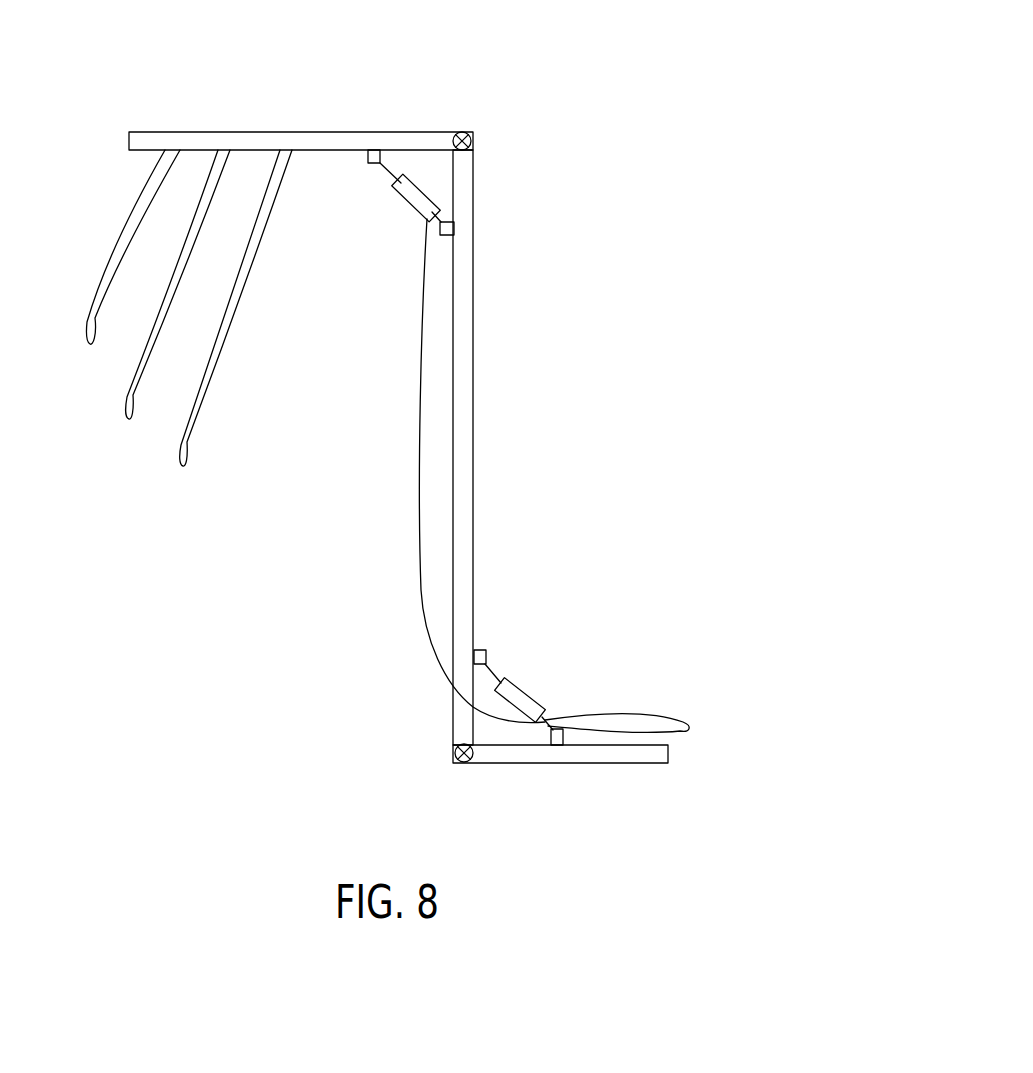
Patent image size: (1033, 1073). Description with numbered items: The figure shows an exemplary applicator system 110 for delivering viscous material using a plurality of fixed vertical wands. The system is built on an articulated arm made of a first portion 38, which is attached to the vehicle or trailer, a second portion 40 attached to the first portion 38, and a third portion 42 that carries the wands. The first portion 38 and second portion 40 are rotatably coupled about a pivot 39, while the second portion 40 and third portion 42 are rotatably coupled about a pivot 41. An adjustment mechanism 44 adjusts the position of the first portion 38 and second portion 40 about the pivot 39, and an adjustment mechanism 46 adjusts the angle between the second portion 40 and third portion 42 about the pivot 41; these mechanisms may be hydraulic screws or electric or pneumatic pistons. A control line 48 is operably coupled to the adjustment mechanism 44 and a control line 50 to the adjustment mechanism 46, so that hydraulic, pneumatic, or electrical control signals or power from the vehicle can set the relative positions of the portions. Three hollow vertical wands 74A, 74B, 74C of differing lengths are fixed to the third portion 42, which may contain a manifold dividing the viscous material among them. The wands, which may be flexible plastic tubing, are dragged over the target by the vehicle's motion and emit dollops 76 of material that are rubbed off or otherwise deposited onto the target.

The applicator system 110 is at (659, 72).
The third portion 42 is at (353, 132).
The second portion 40 is at (473, 406).
The first portion 38 is at (600, 763).
The pivot 41 is at (472, 143).
The pivot 39 is at (456, 748).
The adjustment mechanism 46 is at (407, 203).
The adjustment mechanism 44 is at (525, 695).
The control line 50 is at (421, 424).
The control line 48 is at (688, 730).
The hollow vertical wand 74A is at (136, 213).
The hollow vertical wand 74B is at (172, 273).
The hollow vertical wand 74C is at (225, 303).
The dollops 76 is at (83, 356).